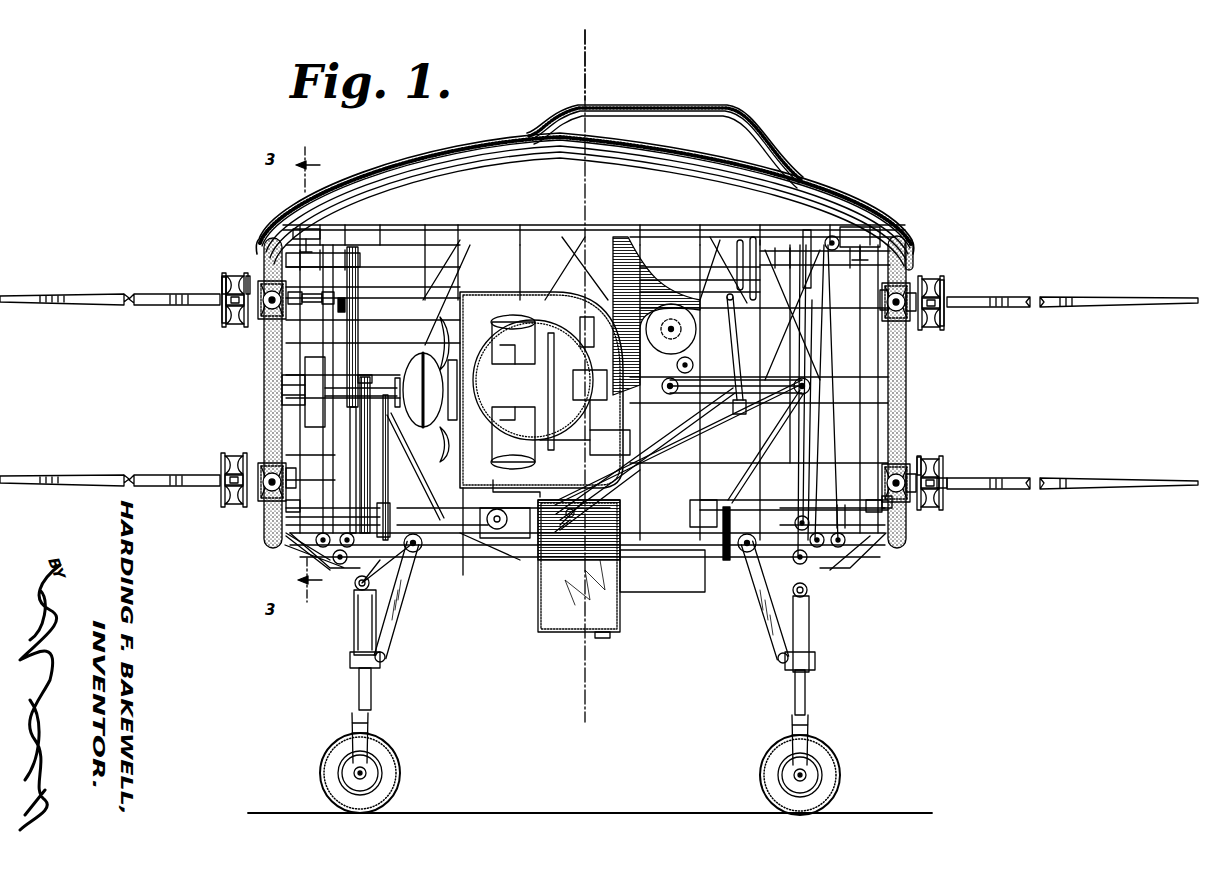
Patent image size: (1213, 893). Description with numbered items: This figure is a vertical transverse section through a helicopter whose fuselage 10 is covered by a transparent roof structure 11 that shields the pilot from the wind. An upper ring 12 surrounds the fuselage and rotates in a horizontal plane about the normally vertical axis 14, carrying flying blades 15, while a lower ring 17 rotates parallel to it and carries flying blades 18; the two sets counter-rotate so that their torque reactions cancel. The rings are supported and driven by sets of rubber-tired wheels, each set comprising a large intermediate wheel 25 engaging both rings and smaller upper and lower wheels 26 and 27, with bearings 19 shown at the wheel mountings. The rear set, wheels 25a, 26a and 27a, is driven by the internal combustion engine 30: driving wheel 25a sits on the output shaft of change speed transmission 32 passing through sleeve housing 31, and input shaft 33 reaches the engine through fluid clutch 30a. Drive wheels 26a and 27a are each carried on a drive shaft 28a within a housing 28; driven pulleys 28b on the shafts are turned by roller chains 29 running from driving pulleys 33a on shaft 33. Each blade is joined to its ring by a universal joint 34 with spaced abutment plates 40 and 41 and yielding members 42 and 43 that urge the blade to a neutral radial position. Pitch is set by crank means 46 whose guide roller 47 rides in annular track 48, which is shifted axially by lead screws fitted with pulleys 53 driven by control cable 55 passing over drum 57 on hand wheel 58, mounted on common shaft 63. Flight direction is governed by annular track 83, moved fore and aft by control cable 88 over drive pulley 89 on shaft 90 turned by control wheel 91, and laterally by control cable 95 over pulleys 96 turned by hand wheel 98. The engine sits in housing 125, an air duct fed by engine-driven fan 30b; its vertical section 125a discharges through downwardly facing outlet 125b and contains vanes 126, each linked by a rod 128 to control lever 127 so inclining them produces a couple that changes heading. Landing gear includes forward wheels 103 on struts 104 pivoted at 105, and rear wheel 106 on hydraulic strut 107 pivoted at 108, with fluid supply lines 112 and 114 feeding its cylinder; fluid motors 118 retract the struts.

The fuselage 10 is at (722, 572).
The transparent roof structure 11 is at (832, 185).
The upper ring 12 is at (918, 278).
The axis 14 is at (590, 92).
The flying blades 15 is at (110, 292).
The lower ring 17 is at (908, 466).
The flying blades 18 is at (90, 470).
The bearing hub 19 is at (270, 322).
The intermediate wheel 25 is at (905, 378).
The driving wheel 25a is at (266, 342).
The upper wheel 26 is at (910, 250).
The drive wheel 26a is at (262, 246).
The lower wheel 27 is at (773, 250).
The drive wheel 27a is at (268, 540).
The housing 28 is at (345, 246).
The drive shaft 28a is at (398, 246).
The driven pulley 28b is at (372, 258).
The roller chains or belts 29 is at (324, 318).
The internal combustion engine 30 is at (545, 394).
The fluid clutch 30a is at (490, 330).
The engine-driven fan 30b is at (470, 445).
The sleeve housing 31 is at (282, 392).
The change speed transmission 32 is at (305, 360).
The input shaft 33 is at (335, 393).
The driving pulleys 33a is at (423, 360).
The universal joint 34 is at (224, 312).
The abutment plate 40 is at (262, 276).
The abutment plate 41 is at (215, 288).
The yielding members 42 is at (232, 276).
The yielding member 43 is at (946, 478).
The crank means 46 is at (292, 474).
The guide roller 47 is at (900, 505).
The annular track 48 is at (268, 505).
The pulley 53 is at (280, 545).
The control cable 55 is at (355, 590).
The drum 57 is at (672, 326).
The hand wheel 58 is at (652, 338).
The common shaft 63 is at (690, 340).
The annular track 83 is at (300, 318).
The control cable 88 is at (832, 370).
The drive pulley 89 is at (832, 240).
The shaft 90 is at (740, 240).
The control wheel 91 is at (728, 247).
The control cable 95 is at (828, 418).
The idler pulleys / drive pulley 96 is at (805, 243).
The hand wheel 98 is at (753, 240).
The forward wheels 103 is at (762, 752).
The strut 104 is at (810, 648).
The pivotal connection 105 is at (805, 592).
The rear wheel 106 is at (400, 755).
The strut 107 is at (372, 690).
The pivotal mounting 108 is at (396, 598).
The fluid supply line 112 is at (350, 620).
The fluid supply line 114 is at (348, 662).
The fluid motor 118 is at (742, 520).
The housing 125 is at (628, 252).
The vertical terminal section 125a is at (625, 605).
The outlet 125b is at (603, 634).
The vanes 126 is at (625, 500).
The control lever 127 is at (735, 322).
The rod 128 is at (706, 440).